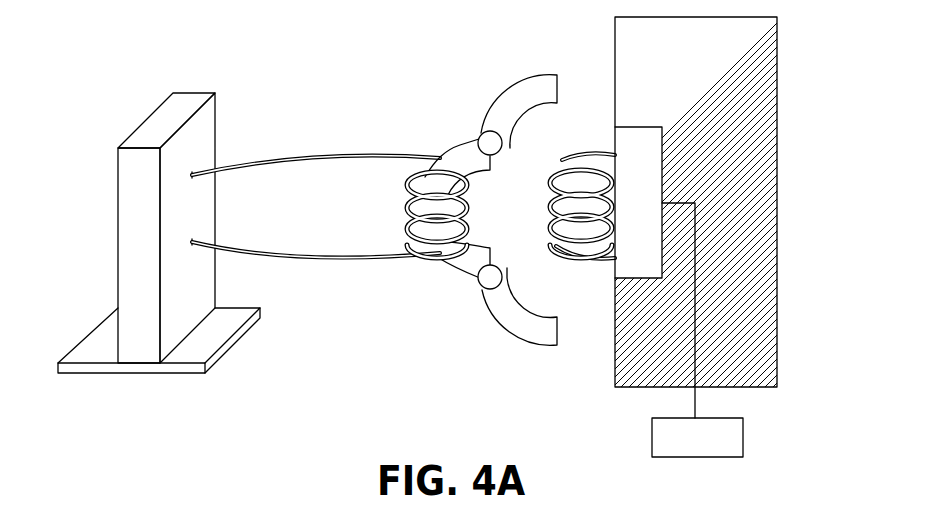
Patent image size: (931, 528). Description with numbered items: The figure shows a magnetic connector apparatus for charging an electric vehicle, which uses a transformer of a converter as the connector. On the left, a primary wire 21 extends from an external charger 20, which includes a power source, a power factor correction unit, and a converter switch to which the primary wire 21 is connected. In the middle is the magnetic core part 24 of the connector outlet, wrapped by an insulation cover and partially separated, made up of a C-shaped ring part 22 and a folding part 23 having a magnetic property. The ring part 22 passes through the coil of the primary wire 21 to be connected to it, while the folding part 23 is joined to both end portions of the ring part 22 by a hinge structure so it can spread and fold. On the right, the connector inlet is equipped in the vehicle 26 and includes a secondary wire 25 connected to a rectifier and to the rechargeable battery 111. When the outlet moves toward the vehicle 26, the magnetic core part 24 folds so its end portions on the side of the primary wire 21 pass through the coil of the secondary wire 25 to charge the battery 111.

The external charger 20 is at (118, 272).
The primary wire 21 is at (282, 140).
The C-shaped ring part 22 is at (452, 150).
The folding part 23 is at (500, 108).
The magnetic core part 24 is at (500, 60).
The secondary wire 25 is at (583, 140).
The vehicle 26 is at (628, 362).
The rechargeable battery 111 is at (743, 438).